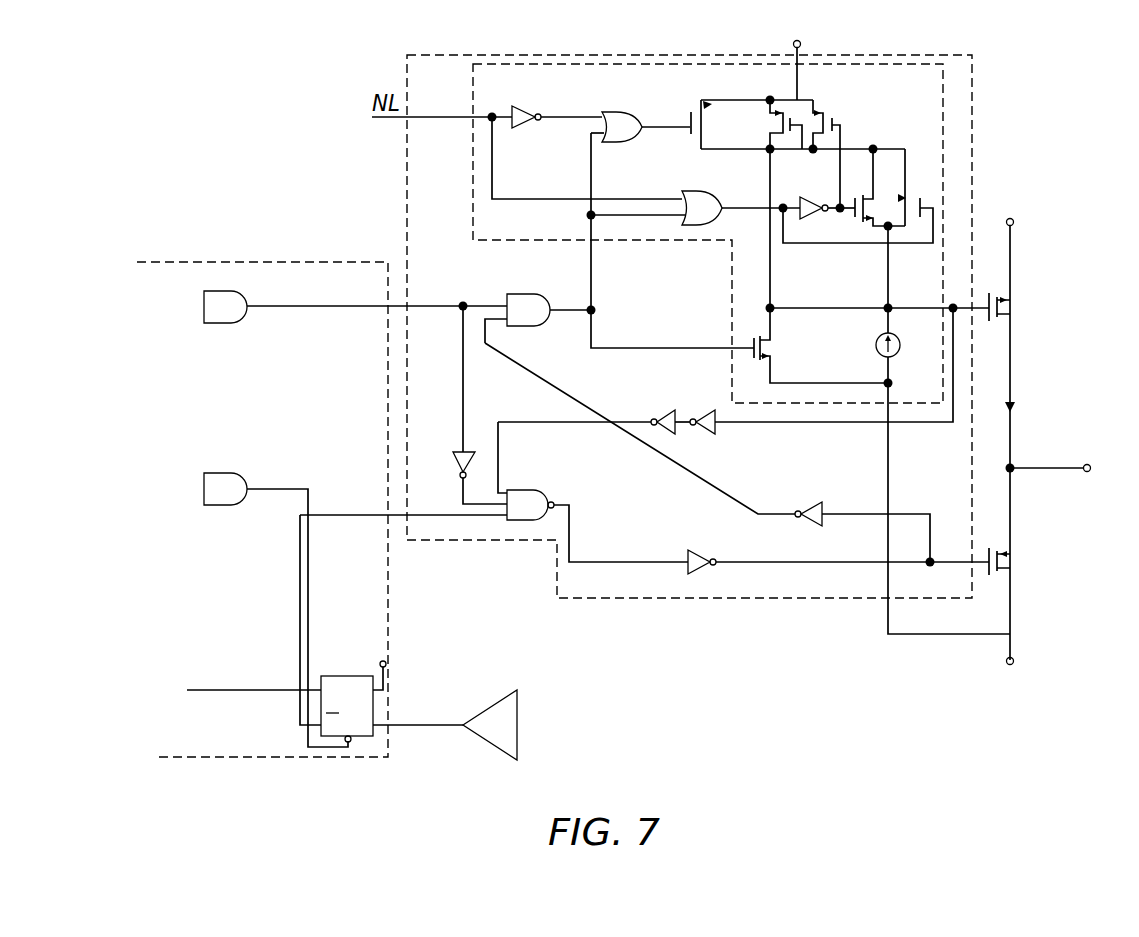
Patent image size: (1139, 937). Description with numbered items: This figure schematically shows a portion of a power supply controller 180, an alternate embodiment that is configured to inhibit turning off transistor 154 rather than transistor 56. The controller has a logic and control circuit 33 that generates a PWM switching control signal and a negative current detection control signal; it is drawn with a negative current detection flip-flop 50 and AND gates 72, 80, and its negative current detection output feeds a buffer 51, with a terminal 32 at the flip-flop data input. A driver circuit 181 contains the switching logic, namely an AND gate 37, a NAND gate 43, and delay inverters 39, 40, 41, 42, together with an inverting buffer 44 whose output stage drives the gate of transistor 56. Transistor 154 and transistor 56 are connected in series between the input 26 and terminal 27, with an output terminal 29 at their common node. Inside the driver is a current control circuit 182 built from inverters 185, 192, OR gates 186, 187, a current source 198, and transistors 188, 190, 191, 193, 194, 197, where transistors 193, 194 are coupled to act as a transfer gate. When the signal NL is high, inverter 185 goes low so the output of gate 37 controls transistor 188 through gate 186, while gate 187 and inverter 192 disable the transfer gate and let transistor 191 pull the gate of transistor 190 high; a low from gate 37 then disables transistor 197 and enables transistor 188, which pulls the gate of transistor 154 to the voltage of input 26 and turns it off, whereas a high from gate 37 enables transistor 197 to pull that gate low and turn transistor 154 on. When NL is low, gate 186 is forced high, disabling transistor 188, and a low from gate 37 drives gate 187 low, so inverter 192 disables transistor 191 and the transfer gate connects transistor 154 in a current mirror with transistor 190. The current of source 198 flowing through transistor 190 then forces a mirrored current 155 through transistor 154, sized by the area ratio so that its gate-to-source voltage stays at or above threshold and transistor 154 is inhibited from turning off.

The input 26 is at (800, 42).
The ground terminal 27 is at (1014, 661).
The output terminal 29 is at (1090, 464).
The data input terminal 32 is at (380, 662).
The logic and control circuit 33 is at (211, 757).
The AND gate 37 is at (525, 294).
The delay inverter 39 is at (662, 410).
The delay inverter 40 is at (703, 410).
The delay inverter 41 is at (806, 502).
The delay inverter 42 is at (455, 463).
The NAND gate 43 is at (526, 490).
The inverting buffer 44 is at (700, 552).
The negative current detection flip-flop 50 is at (376, 731).
The buffer 51 is at (490, 748).
The transistor 56 is at (1005, 562).
The AND gate 72 is at (218, 323).
The AND gate 80 is at (220, 505).
The transistor 154 is at (1003, 309).
The current 155 is at (1016, 405).
The power supply controller 180 is at (657, 674).
The driver circuit 181 is at (595, 598).
The current control circuit 182 is at (473, 158).
The inverter 185 is at (518, 112).
The OR gate 186 is at (610, 112).
The OR gate 187 is at (690, 191).
The transistor 188 is at (687, 112).
The transistor 190 is at (768, 127).
The transistor 191 is at (828, 112).
The inverter 192 is at (805, 197).
The transistor 193 is at (855, 214).
The transistor 194 is at (918, 196).
The transistor 197 is at (766, 352).
The current source 198 is at (876, 345).